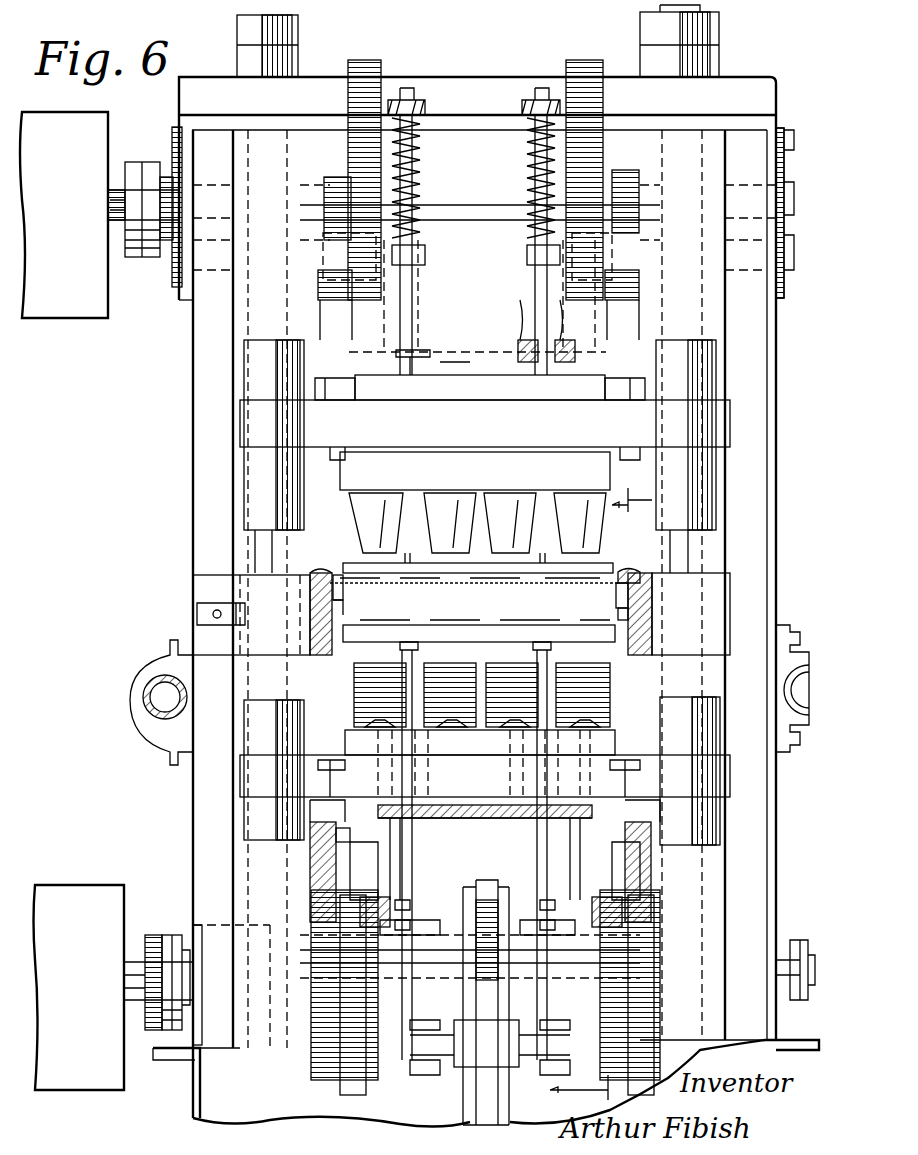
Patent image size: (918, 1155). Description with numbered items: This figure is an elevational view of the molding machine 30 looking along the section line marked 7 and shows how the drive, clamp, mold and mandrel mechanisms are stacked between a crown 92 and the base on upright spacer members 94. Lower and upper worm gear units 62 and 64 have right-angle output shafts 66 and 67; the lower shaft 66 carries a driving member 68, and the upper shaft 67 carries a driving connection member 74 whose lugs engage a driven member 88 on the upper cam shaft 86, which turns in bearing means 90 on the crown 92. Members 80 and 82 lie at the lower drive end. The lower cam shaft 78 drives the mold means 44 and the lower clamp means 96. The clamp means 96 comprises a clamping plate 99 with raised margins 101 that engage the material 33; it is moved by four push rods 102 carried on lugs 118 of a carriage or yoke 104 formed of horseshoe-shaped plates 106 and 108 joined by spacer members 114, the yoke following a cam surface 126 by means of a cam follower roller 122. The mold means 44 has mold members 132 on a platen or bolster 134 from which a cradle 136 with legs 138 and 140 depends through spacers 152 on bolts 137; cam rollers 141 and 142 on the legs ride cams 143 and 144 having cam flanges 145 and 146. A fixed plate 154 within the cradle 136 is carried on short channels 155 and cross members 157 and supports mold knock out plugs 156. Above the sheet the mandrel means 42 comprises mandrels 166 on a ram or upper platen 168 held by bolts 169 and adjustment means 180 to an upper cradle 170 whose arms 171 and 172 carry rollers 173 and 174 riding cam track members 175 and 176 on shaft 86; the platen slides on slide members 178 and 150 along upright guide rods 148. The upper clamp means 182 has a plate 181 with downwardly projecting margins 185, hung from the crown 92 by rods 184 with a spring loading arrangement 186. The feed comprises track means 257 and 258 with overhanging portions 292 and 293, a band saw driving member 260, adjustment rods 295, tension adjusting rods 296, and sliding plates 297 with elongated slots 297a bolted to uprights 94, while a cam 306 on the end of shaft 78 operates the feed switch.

The press assembly 30 is at (102, 383).
The material 33 is at (622, 567).
The mandrel means 42 is at (349, 531).
The mold means 44 is at (341, 682).
The lower worm gear unit 62 is at (57, 900).
The upper worm gear unit 64 is at (95, 312).
The lower output shaft 66 is at (124, 980).
The upper output shaft 67 is at (108, 198).
The driving member 68 is at (152, 935).
The driving connection member 74 is at (135, 162).
The lower cam shaft 78 is at (230, 990).
The gear 80 is at (177, 935).
The plate 82 is at (199, 913).
The upper cam shaft 86 is at (460, 213).
The driven member 88 is at (158, 170).
The bearing means 90 is at (161, 282).
The crown 92 is at (196, 84).
The upright spacer members 94 is at (755, 328).
The lower clamp means 96 is at (516, 611).
The clamping plate 99 is at (485, 624).
The raised margin 101 is at (432, 624).
The push rods 102 is at (550, 650).
The carriage or yoke 104 is at (457, 1114).
The horseshoe-shaped plate 106 is at (510, 1110).
The horseshoe-shaped plate 108 is at (463, 1080).
The spacer members 114 is at (492, 1056).
The lugs 118 is at (405, 1050).
The cam follower roller 122 is at (488, 888).
The cam surface 126 is at (498, 935).
The mold members 132 is at (612, 683).
The platen or bolster 134 is at (320, 778).
The cradle 136 is at (667, 833).
The bolts 137 is at (320, 778).
The cradle leg 138 is at (655, 870).
The cradle leg 140 is at (320, 890).
The cam roller 141 is at (610, 900).
The cam roller 142 is at (342, 895).
The cam 143 is at (640, 1018).
The cam 144 is at (360, 1010).
The cam flange 145 is at (620, 972).
The cam flange 146 is at (355, 975).
The upright guide rods 148 is at (262, 542).
The slide members 150 is at (260, 828).
The spacers 152 is at (367, 803).
The fixed plate 154 is at (442, 815).
The short channels 155 is at (412, 883).
The mold knock out plugs 156 is at (512, 775).
The cross members 157 is at (412, 918).
The plugs or mandrels 166 is at (510, 490).
The ram or upper platen 168 is at (494, 420).
The bolts 169 is at (330, 424).
The upper cradle 170 is at (490, 316).
The cradle arm 171 is at (322, 323).
The cradle arm 172 is at (628, 323).
The roller 173 is at (323, 258).
The roller 174 is at (612, 245).
The cam track member 175 is at (372, 70).
The cam track member 176 is at (583, 62).
The slide members 178 is at (260, 470).
The adjustment means 180 is at (368, 395).
The plate 181 is at (355, 565).
The upper clamp means 182 is at (617, 551).
The rods 184 is at (418, 278).
The downwardly projecting margins 185 is at (425, 580).
The spring loading arrangement 186 is at (418, 155).
The track means 257 is at (280, 640).
The track means 258 is at (712, 608).
The driving member 260 is at (348, 585).
The overhanging portion 292 is at (655, 573).
The overhanging portion 293 is at (312, 585).
The adjustment rods 295 is at (612, 592).
The tension adjusting rods 296 is at (150, 683).
The sliding plates 297 is at (197, 595).
The elongated slots 297a is at (200, 618).
The cam 306 is at (795, 945).
The section line 7- 7 is at (601, 787).